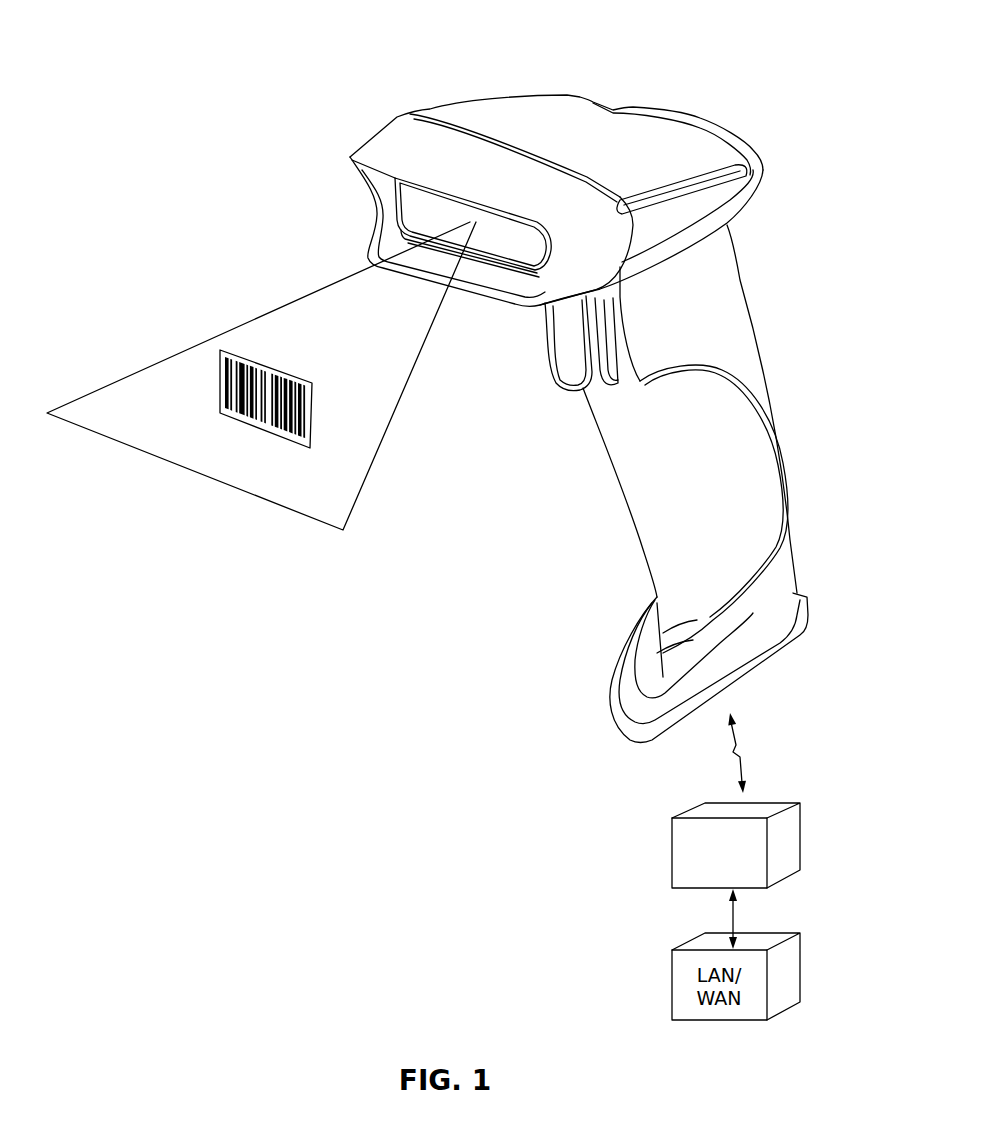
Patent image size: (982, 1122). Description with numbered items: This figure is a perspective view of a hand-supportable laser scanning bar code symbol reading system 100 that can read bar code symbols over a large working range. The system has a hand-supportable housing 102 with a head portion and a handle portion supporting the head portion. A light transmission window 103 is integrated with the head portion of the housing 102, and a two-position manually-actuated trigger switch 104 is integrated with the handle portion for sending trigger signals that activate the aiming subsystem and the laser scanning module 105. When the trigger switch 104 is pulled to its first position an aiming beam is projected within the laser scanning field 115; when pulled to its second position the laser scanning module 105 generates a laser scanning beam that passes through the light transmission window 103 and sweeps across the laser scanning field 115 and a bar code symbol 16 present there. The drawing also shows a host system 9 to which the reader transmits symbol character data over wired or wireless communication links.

The hand-supportable laser scanning bar code symbol reading system 100 is at (764, 104).
The hand-supportable housing 102 is at (763, 453).
The light transmission window 103 is at (437, 202).
The trigger switch 104 is at (557, 352).
The laser scanning module 105 is at (578, 143).
The laser scanning field 115 is at (177, 467).
The bar code symbol 16 is at (310, 430).
The host system 9 is at (671, 852).